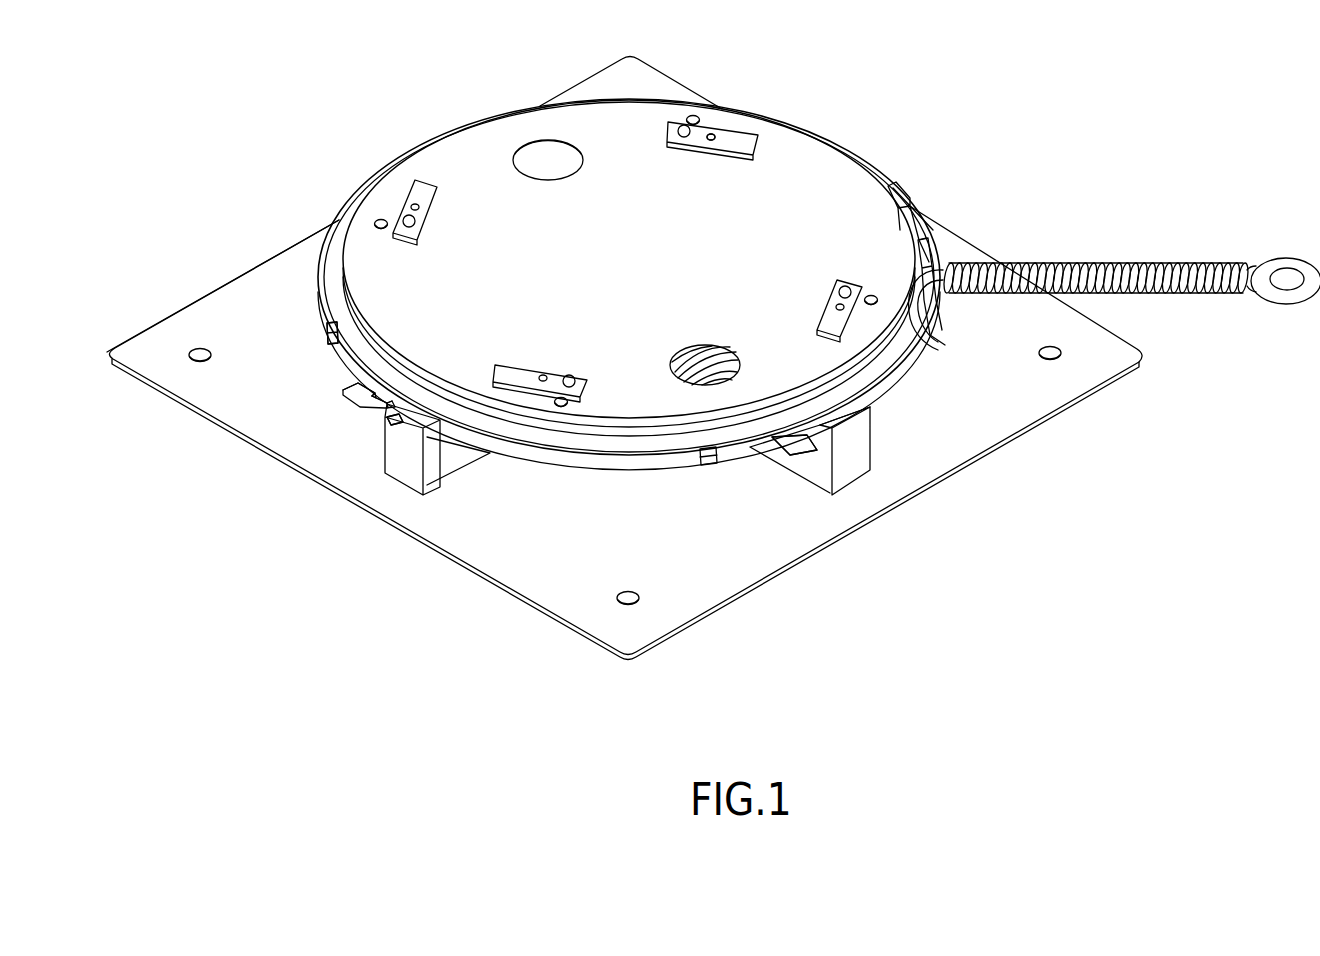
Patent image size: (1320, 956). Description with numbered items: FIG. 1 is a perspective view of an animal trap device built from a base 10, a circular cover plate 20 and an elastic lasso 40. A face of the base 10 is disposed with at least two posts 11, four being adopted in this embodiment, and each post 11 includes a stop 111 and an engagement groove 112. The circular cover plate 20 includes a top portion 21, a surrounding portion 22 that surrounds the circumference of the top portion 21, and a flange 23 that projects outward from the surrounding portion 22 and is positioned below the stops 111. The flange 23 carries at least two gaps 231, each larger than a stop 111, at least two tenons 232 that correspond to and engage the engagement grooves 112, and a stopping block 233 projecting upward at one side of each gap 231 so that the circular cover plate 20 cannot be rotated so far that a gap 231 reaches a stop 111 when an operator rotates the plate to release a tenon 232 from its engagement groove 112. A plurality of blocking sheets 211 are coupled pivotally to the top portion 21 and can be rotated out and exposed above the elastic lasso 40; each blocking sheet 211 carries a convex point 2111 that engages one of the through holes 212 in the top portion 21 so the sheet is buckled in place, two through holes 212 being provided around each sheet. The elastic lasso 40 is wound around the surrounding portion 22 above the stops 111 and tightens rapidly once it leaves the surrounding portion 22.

The base 10 is at (767, 566).
The post 11 is at (404, 508).
The stop 111 is at (397, 421).
The engagement groove 112 is at (840, 427).
The circular cover plate 20 is at (640, 267).
The top portion 21 is at (805, 163).
The blocking sheet 211 is at (755, 147).
The convex point 2111 is at (713, 134).
The through hole 212 is at (692, 116).
The surrounding portion 22 is at (898, 238).
The flange 23 is at (924, 338).
The gap 231 is at (345, 370).
The tenon 232 is at (360, 404).
The stopping block 233 is at (329, 338).
The elastic lasso 40 is at (1222, 206).